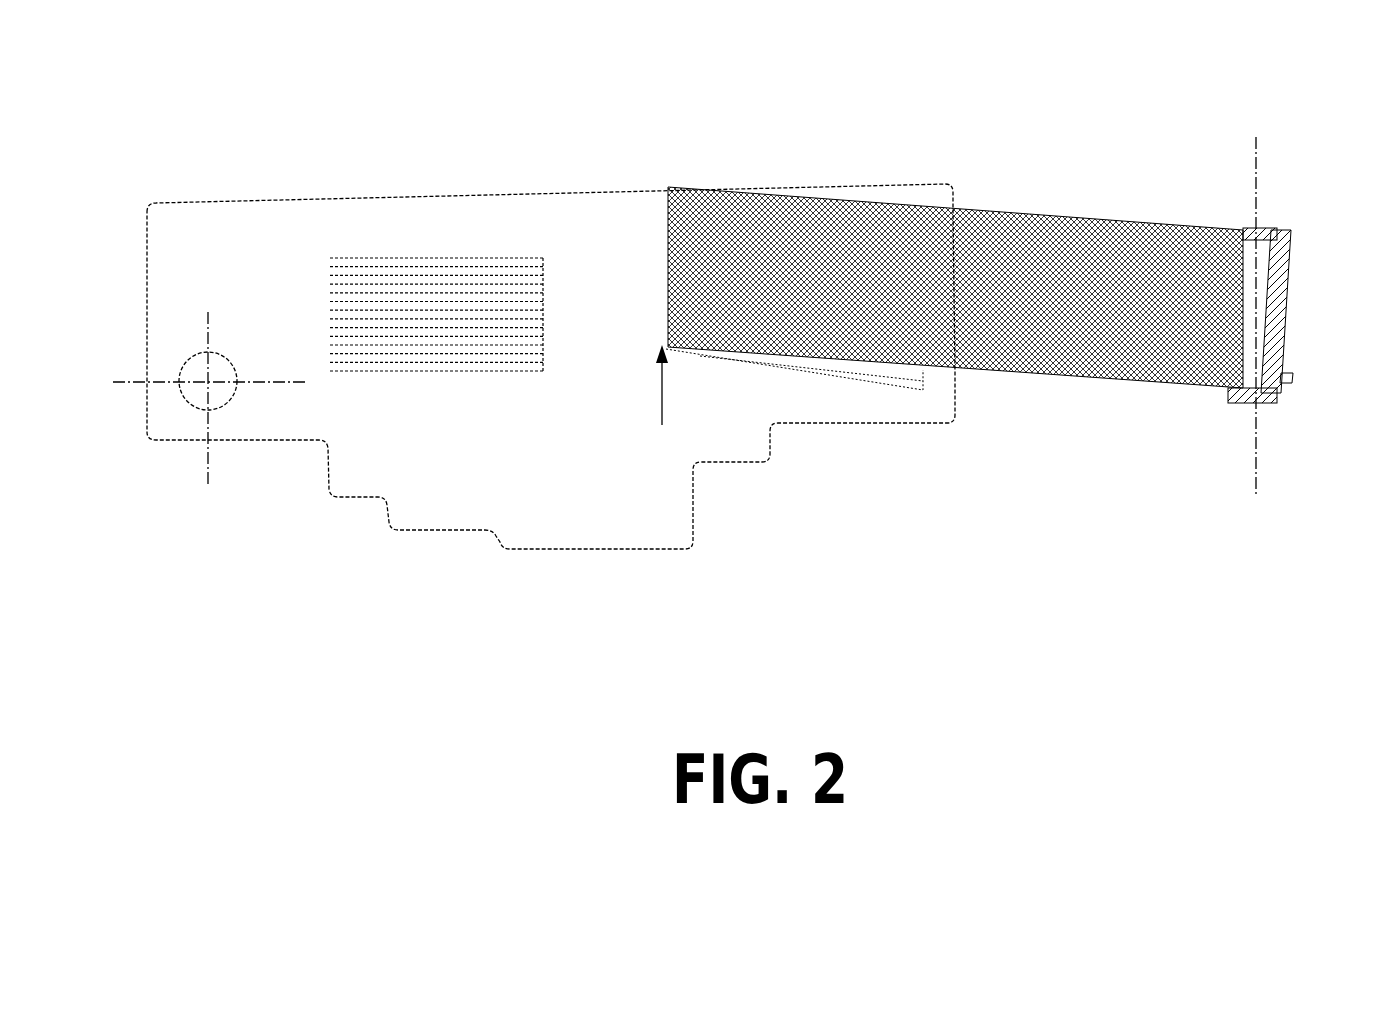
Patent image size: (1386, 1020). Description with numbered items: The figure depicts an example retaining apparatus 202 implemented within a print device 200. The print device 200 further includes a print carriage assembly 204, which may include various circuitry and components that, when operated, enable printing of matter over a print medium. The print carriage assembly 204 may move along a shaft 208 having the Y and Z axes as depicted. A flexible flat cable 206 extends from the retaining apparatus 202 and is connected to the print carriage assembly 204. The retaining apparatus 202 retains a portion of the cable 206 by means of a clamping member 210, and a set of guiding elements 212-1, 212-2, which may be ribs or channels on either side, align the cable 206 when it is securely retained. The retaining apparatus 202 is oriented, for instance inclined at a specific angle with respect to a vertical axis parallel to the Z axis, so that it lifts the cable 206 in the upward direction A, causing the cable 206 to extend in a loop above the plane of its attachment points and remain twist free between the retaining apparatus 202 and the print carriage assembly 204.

The print device 200 is at (730, 78).
The retaining apparatus 202 is at (1308, 212).
The print carriage assembly 204 is at (327, 198).
The flexible flat cable 206 is at (1022, 221).
The shaft 208 is at (230, 404).
The clamping member 210 is at (1288, 292).
The guiding element 212-1 is at (1240, 404).
The guiding element 212-2 is at (1250, 228).